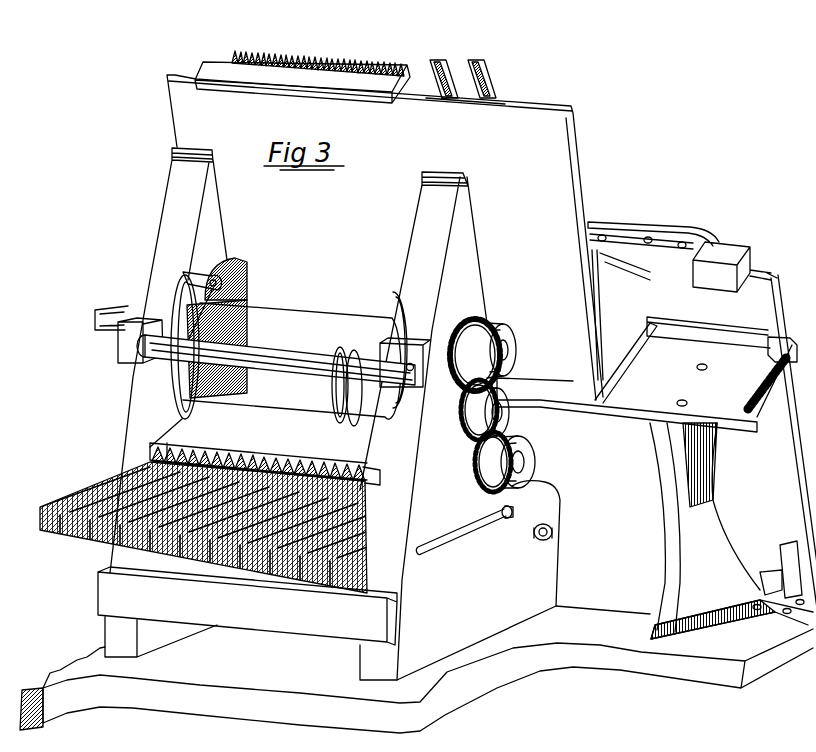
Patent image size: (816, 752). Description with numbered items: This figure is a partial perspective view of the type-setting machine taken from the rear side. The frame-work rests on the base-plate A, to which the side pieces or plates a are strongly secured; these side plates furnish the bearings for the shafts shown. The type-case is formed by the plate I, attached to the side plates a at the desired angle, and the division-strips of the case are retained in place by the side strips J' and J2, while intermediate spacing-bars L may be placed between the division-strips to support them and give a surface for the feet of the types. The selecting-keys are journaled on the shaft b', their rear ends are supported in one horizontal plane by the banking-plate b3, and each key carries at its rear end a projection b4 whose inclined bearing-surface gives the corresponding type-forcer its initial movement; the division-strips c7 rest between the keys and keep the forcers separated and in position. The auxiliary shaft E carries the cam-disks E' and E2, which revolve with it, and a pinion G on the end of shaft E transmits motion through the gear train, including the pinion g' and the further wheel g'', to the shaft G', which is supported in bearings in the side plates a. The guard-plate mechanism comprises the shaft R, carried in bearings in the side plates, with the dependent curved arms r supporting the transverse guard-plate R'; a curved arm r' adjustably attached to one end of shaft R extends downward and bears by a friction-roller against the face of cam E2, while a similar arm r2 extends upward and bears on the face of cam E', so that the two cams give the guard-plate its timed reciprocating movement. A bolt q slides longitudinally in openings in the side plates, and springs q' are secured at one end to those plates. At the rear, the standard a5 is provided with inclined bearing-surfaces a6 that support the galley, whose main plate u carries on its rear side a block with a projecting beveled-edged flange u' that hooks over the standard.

The plate I is at (545, 172).
The side strip J' is at (302, 66).
The side strip J2 is at (438, 72).
The auxiliary shaft E is at (129, 325).
The cam-disk E' is at (229, 279).
The cam-disk E2 is at (396, 308).
The curved arm r2 is at (198, 300).
The shaft R is at (276, 358).
The guard-plate R' is at (292, 359).
The dependent curved arms r is at (173, 361).
The curved arm r' is at (339, 386).
The side plates a is at (323, 475).
The division-strips c7 is at (284, 456).
The projection b4 is at (106, 492).
The banking-plate b3 is at (247, 623).
The pinion G is at (482, 342).
The pinion g' is at (476, 410).
The gear g'' is at (480, 462).
The shaft G' is at (532, 462).
The spacing-bars L is at (566, 394).
The bolt q is at (513, 516).
The springs q' is at (461, 532).
The shaft b' is at (558, 526).
The base-plate A is at (580, 630).
The beveled-edged flange u' is at (722, 339).
The galley main plate u is at (731, 531).
The inclined bearing-surfaces a6 is at (792, 544).
The standard a5 is at (745, 584).